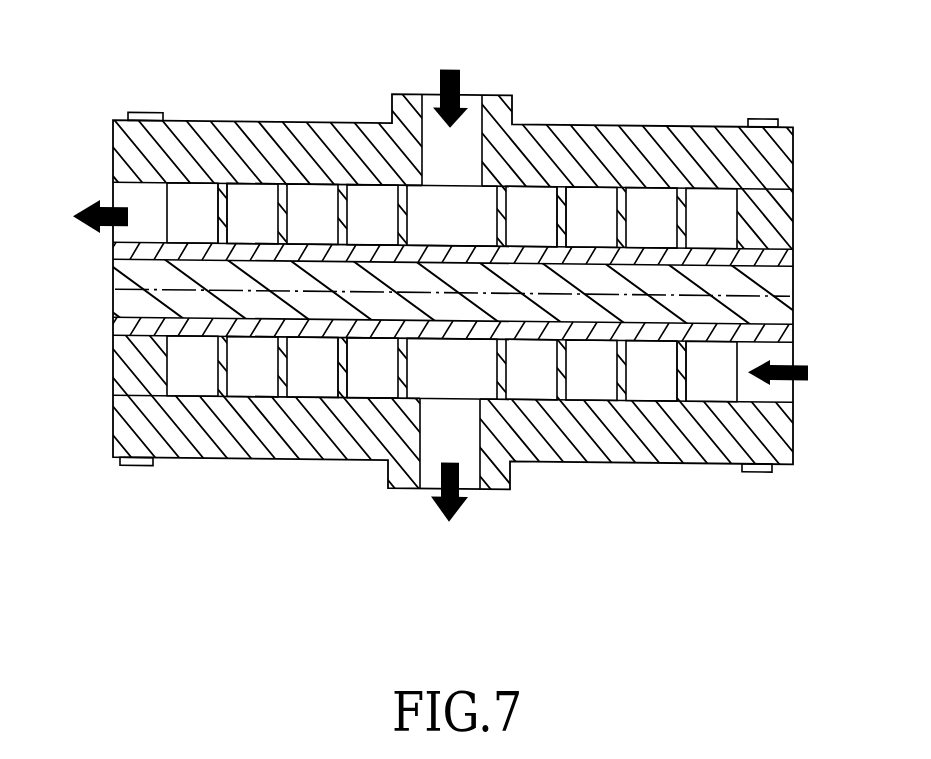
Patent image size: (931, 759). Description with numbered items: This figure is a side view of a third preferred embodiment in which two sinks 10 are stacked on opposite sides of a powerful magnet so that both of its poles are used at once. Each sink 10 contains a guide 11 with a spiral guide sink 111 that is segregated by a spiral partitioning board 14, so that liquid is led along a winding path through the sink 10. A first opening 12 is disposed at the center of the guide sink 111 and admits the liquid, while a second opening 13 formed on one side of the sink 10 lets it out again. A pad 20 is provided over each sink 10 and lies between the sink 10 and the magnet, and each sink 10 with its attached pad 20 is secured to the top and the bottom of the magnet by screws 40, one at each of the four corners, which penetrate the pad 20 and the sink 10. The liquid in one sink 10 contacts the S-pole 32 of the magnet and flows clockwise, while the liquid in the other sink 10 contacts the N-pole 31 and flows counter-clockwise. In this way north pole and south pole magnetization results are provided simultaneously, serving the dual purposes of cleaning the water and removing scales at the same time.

The sink 10 is at (793, 168).
The guide 11 is at (708, 186).
The guide sink 111 is at (363, 190).
The first opening 12 is at (430, 104).
The second opening 13 is at (116, 198).
The spiral partitioning board 14 is at (222, 183).
The pad 20 is at (113, 330).
The N-pole 31 is at (780, 318).
The S-pole 32 is at (122, 276).
The screw 40 is at (138, 112).